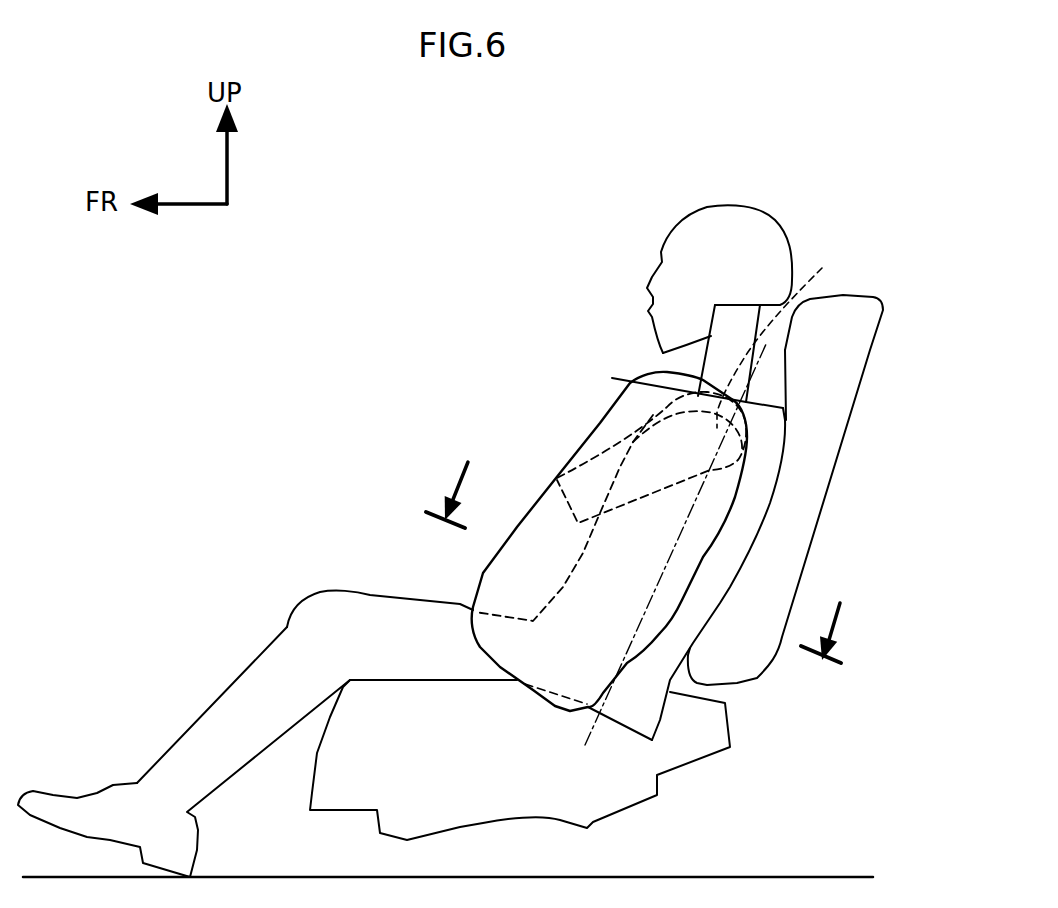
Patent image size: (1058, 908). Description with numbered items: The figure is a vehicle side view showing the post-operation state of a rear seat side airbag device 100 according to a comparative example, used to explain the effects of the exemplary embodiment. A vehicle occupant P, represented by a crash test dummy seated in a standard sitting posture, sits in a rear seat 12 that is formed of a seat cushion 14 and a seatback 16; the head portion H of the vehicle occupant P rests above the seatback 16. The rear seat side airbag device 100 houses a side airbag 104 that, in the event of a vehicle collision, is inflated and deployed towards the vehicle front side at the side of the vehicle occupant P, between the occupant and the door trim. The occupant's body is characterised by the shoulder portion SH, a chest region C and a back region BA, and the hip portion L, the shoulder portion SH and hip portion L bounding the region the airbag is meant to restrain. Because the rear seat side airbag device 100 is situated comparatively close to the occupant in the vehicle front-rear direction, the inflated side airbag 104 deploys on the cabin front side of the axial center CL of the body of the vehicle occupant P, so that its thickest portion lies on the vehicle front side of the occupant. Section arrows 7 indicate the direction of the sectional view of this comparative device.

The rear seat 12 is at (873, 273).
The seat cushion 14 is at (400, 693).
The seatback 16 is at (850, 358).
The rear seat side airbag device 100 is at (563, 423).
The side airbag 104 is at (521, 518).
The section line direction 7 is at (637, 547).
The vehicle occupant P is at (663, 337).
The head portion H is at (740, 217).
The chest C is at (663, 416).
The shoulder portion SH is at (779, 334).
The back BA is at (777, 437).
The hip portion L is at (663, 677).
The axial center CL is at (693, 513).